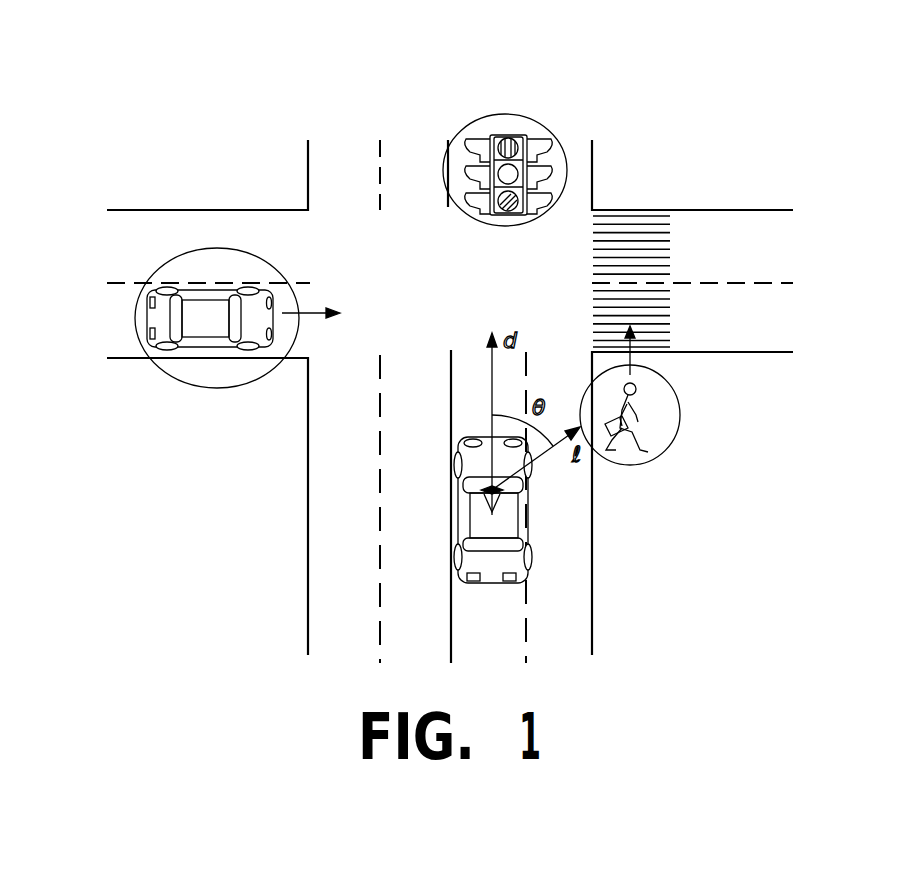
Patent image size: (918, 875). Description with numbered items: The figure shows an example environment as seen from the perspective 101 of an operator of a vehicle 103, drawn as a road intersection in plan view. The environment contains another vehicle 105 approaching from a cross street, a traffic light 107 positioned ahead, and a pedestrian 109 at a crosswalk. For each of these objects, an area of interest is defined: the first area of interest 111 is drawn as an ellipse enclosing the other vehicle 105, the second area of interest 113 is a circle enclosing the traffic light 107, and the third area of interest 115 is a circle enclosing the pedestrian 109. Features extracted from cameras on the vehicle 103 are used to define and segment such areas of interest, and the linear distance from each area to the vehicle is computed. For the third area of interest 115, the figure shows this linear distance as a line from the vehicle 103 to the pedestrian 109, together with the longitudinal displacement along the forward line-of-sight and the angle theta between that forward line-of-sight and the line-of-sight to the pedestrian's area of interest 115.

The perspective 101 is at (503, 495).
The vehicle 103 is at (530, 558).
The other vehicle 105 is at (165, 348).
The traffic light 107 is at (522, 135).
The pedestrian 109 is at (632, 402).
The AOI-1 111 is at (208, 387).
The AOI-2 113 is at (495, 225).
The AOI-3 115 is at (665, 452).